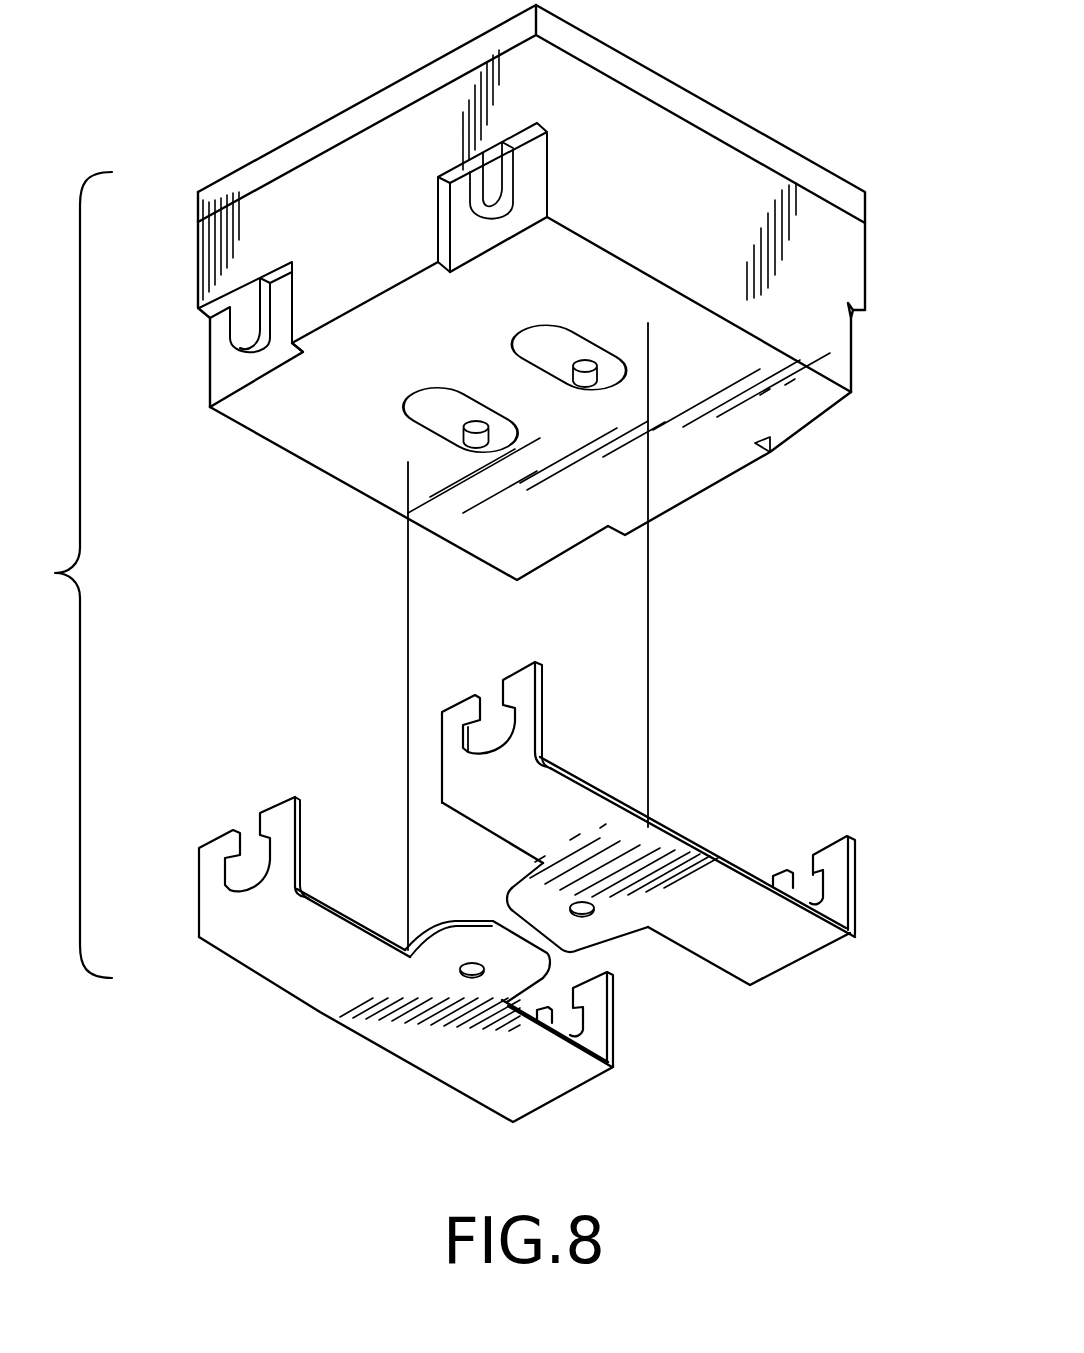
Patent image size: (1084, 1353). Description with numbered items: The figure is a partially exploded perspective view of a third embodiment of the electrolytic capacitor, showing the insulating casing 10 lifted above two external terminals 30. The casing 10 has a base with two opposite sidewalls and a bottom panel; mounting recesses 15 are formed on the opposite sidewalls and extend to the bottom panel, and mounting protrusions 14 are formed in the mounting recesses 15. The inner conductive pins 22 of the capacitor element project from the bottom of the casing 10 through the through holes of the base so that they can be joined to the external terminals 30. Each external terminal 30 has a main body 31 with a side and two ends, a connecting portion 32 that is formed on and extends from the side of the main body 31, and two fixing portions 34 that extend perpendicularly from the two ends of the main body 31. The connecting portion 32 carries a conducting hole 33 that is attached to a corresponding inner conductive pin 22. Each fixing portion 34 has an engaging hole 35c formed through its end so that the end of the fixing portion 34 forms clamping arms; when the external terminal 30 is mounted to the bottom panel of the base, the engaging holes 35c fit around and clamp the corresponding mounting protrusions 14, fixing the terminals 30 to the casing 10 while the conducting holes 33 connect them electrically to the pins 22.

The insulating casing 10 is at (534, 477).
The mounting protrusion 14 is at (493, 190).
The mounting recess 15 is at (515, 137).
The inner conductive pin 22 is at (588, 365).
The external terminal 30 is at (527, 900).
The main body 31 is at (648, 827).
The connecting portion 32 is at (572, 924).
The conducting hole 33 is at (570, 908).
The fixing portion 34 is at (469, 722).
The engaging hole 35c is at (485, 735).